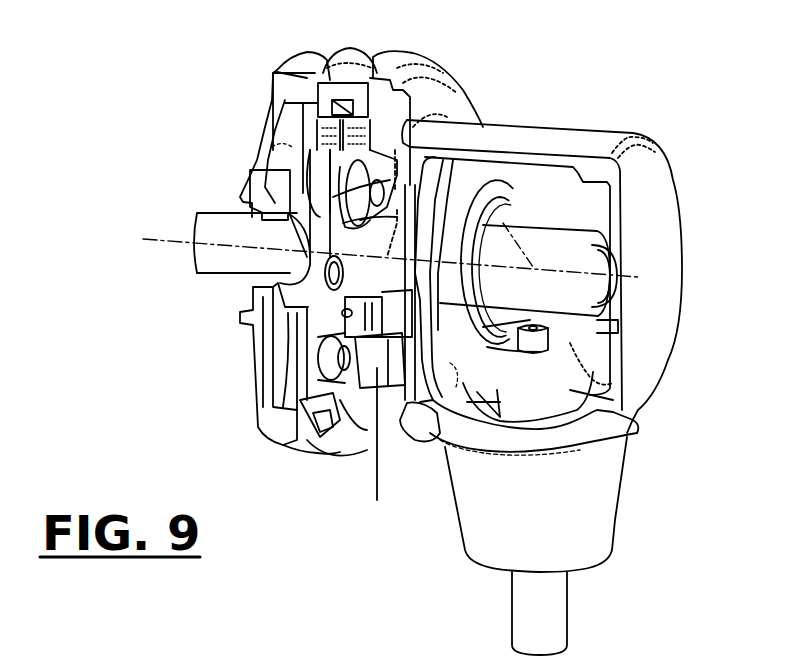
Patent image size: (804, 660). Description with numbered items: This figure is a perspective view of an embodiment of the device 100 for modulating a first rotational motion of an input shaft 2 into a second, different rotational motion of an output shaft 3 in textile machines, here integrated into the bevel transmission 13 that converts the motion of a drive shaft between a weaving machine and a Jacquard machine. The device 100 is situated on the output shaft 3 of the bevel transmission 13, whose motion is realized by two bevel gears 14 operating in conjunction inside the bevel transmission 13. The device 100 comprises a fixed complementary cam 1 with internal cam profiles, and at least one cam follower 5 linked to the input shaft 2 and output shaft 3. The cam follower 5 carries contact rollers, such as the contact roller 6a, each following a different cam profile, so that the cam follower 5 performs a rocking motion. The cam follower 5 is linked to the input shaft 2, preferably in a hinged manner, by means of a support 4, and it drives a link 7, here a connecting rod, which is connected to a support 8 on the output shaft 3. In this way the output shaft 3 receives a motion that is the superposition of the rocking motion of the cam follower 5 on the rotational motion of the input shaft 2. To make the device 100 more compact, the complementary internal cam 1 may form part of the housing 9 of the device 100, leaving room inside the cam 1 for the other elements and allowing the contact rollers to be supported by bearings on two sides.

The device 100 is at (113, 143).
The fixed complementary cam 1 is at (335, 403).
The input shaft 2 is at (568, 253).
The output shaft 3 is at (213, 234).
The support 4 is at (355, 293).
The cam follower 5 is at (303, 147).
The contact roller 6a is at (340, 192).
The link 7 is at (320, 223).
The support 8 is at (290, 267).
The housing 9 is at (293, 68).
The bevel transmission 13 is at (682, 147).
The bevel gears 14 is at (520, 318).